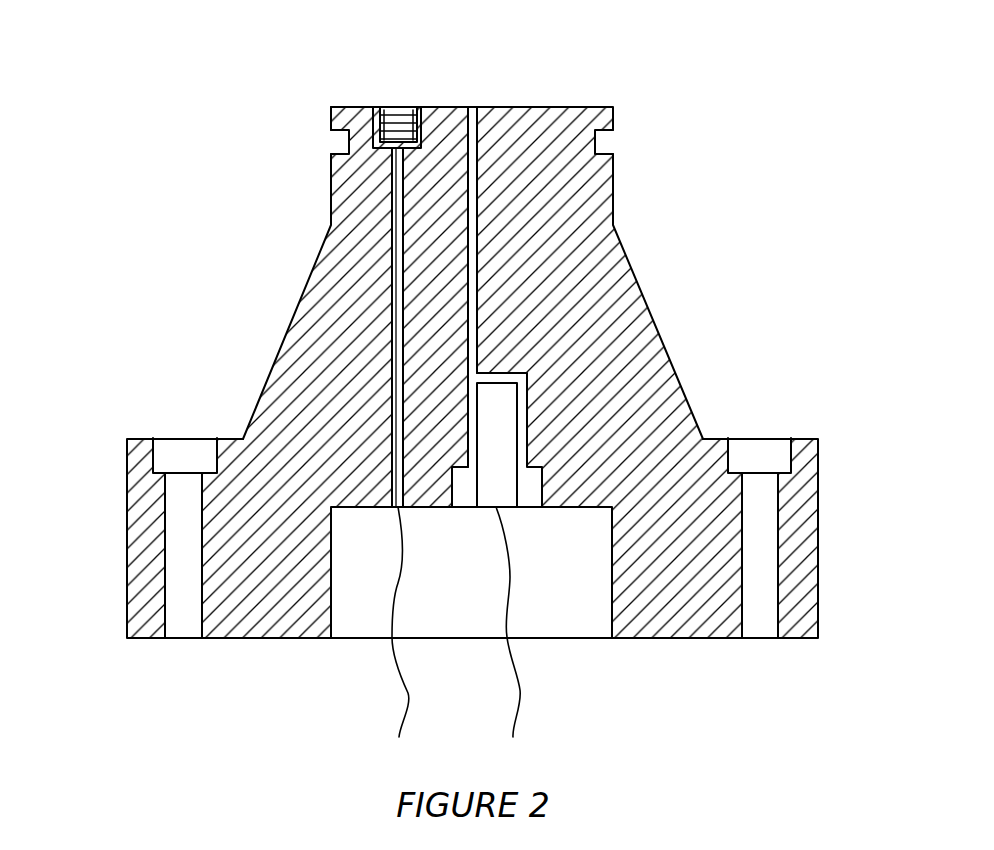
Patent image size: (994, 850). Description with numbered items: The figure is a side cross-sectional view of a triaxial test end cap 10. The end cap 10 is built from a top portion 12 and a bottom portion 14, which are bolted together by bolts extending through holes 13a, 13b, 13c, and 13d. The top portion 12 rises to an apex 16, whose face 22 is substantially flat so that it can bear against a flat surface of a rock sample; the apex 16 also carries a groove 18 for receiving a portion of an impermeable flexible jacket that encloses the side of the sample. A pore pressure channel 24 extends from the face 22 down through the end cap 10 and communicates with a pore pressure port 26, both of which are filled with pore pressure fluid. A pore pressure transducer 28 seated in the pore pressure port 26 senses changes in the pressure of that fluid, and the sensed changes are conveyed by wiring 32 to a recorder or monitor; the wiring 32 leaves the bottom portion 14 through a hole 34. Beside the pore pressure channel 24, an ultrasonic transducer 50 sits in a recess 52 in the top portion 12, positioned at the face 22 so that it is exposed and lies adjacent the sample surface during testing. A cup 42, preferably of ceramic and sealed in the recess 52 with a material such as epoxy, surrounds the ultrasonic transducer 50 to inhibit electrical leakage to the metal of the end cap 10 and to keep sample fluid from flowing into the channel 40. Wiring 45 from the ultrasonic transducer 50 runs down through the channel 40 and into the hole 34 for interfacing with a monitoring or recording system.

The end cap 10 is at (295, 215).
The top portion 12 is at (618, 280).
The hole 13a is at (172, 477).
The hole 13b is at (163, 562).
The hole 13c is at (764, 478).
The hole 13d is at (778, 585).
The bottom portion 14 is at (805, 555).
The apex 16 is at (538, 123).
The groove 18 is at (597, 150).
The face 22 is at (361, 106).
The pore pressure channel 24 is at (478, 215).
The pore pressure port 26 is at (522, 441).
The pore pressure transducer 28 is at (490, 410).
The wiring 32 is at (516, 670).
The hole 34 is at (332, 605).
The channel 40 is at (385, 315).
The cup 42 is at (373, 133).
The wiring 45 is at (393, 397).
The ultrasonic transducer 50 is at (386, 107).
The recess 52 is at (418, 108).